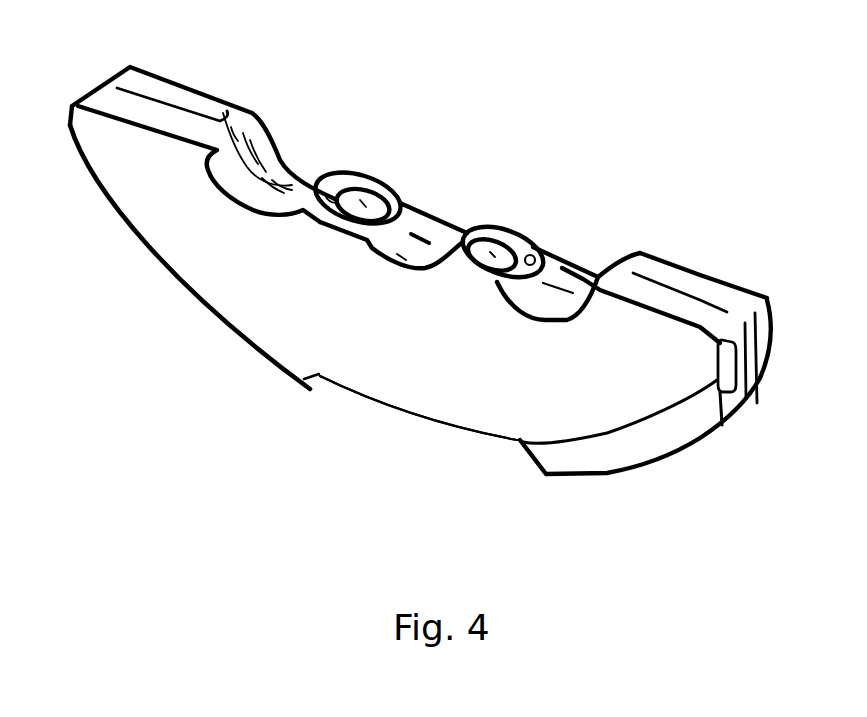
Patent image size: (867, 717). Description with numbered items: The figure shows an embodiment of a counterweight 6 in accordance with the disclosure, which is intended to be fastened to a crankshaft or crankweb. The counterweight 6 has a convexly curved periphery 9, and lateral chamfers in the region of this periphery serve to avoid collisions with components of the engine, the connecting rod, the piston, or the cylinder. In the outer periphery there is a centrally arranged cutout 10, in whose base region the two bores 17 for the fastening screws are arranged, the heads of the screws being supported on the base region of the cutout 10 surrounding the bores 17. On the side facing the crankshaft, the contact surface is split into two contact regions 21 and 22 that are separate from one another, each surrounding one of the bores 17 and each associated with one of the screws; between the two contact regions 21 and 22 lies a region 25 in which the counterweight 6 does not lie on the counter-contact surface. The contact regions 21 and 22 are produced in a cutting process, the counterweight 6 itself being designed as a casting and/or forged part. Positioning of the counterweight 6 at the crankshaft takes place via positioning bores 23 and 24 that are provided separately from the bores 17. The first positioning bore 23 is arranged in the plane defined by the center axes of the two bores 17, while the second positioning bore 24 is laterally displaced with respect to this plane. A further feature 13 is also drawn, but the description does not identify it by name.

The counterweight 6 is at (407, 358).
The convexly curved periphery 9 is at (597, 483).
The cutout 10 is at (449, 464).
The receiving groove 13 is at (223, 130).
The bores 17 is at (372, 178).
The first contact region 21 is at (407, 196).
The second contact region 22 is at (502, 283).
The first positioning bore 23 is at (323, 177).
The second positioning bore 24 is at (550, 247).
The region 25 is at (400, 254).